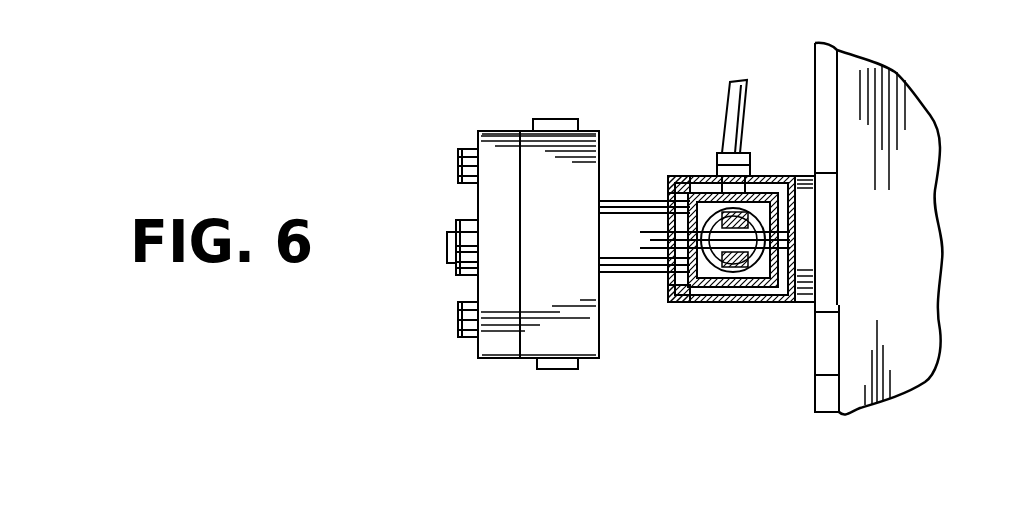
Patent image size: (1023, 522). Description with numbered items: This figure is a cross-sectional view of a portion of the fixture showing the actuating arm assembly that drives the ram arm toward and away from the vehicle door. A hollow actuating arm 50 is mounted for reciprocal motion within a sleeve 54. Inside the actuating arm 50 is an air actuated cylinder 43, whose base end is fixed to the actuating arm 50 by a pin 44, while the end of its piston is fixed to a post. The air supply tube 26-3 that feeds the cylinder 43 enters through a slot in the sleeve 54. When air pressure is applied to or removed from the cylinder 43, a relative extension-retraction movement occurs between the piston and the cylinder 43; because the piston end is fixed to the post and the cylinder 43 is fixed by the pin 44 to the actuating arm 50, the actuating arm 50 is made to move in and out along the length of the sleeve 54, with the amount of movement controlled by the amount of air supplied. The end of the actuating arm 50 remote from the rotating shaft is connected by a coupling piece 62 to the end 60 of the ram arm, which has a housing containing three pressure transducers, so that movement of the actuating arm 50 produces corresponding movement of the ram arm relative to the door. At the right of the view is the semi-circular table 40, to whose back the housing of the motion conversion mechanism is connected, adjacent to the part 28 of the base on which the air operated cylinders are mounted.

The end of ram arm 60 is at (527, 147).
The coupling piece 62 is at (643, 212).
The sleeve 54 is at (773, 174).
The air actuated cylinder 43 is at (709, 280).
The actuating arm 50 is at (746, 272).
The pin 44 is at (705, 239).
The air supply tube 26-3 is at (733, 116).
The semi-circular table 40 is at (827, 380).
The part of the base 28 is at (920, 247).